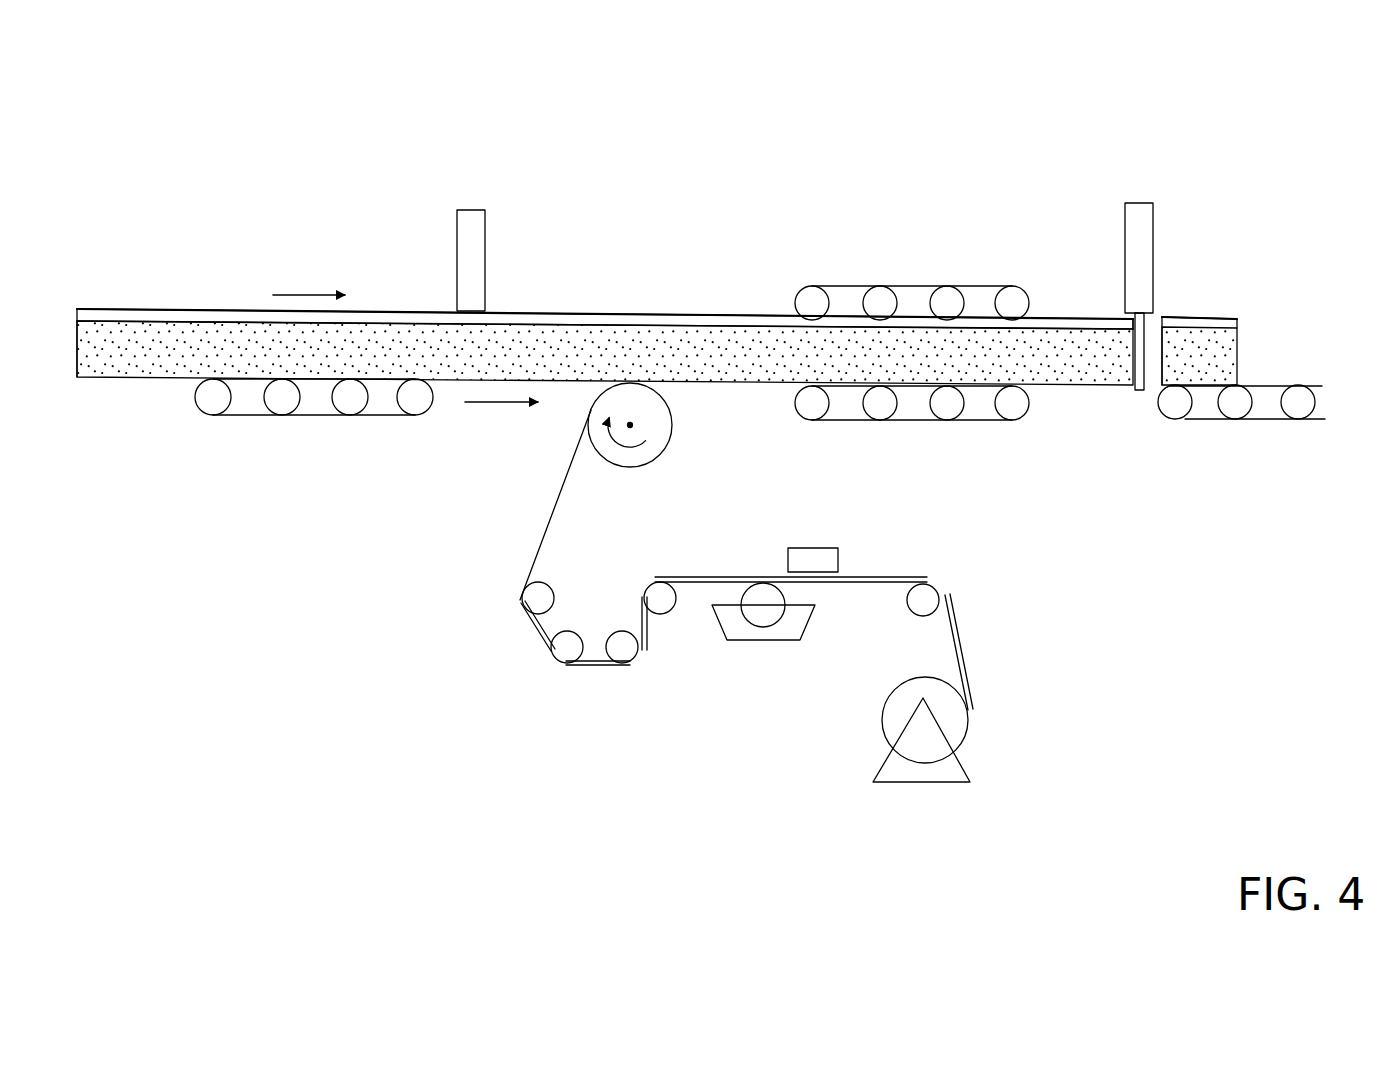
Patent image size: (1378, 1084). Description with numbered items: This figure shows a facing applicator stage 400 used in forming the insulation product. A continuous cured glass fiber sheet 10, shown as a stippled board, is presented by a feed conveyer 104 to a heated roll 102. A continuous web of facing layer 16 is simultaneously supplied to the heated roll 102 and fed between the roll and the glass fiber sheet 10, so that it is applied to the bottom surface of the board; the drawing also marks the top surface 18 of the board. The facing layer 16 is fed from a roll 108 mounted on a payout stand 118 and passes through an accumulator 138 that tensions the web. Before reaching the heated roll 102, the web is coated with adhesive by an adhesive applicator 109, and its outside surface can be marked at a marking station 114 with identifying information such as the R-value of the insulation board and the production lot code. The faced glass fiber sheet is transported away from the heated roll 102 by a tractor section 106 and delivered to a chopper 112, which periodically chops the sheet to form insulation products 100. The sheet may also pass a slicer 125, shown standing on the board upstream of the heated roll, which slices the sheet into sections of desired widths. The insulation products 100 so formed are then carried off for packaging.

The apparatus 400 is at (133, 637).
The glass fiber sheet 10 is at (148, 348).
The facing layer 16 is at (362, 314).
The top surface 18 is at (1038, 323).
The insulation products 100 is at (1200, 345).
The heated roll 102 is at (658, 423).
The feed conveyer 104 is at (318, 395).
The tractor section 106 is at (910, 405).
The roll 108 is at (897, 710).
The adhesive applicator 109 is at (805, 627).
The chopper 112 is at (1138, 217).
The marking station 114 is at (810, 560).
The payout stand 118 is at (925, 732).
The slicer 125 is at (575, 125).
The accumulator 138 is at (558, 645).